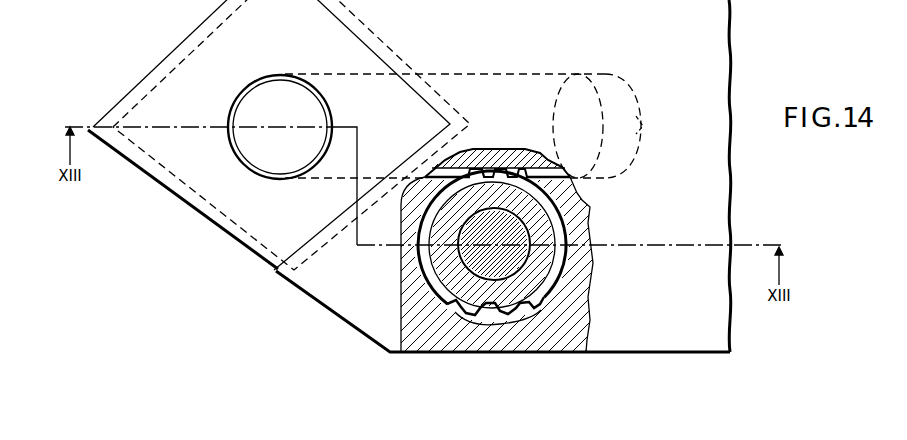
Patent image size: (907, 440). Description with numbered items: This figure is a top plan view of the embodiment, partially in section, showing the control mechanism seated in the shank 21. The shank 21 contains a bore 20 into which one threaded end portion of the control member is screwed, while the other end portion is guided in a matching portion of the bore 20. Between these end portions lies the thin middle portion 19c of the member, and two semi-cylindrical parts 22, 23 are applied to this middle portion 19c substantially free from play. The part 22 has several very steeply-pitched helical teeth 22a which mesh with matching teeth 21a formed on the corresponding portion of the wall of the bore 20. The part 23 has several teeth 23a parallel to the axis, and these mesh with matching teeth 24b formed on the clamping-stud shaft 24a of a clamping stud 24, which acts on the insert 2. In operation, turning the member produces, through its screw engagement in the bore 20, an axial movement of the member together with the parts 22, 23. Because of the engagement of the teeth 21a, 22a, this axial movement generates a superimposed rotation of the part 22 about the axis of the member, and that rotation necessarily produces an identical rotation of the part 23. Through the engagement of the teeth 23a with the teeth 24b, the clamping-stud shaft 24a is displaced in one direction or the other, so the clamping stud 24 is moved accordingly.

The cutting insert 2 is at (152, 78).
The clamping stud 24 is at (277, 104).
The clamping-stud shaft 24a is at (548, 75).
The teeth 24b is at (493, 148).
The semi-cylindrical part 23 is at (527, 208).
The teeth 23a is at (523, 148).
The thin middle portion 19c is at (510, 233).
The semi-cylindrical part 22 is at (535, 264).
The helical teeth 22a is at (521, 301).
The shank 21 is at (413, 316).
The teeth 21a is at (513, 327).
The bore 20 is at (420, 274).